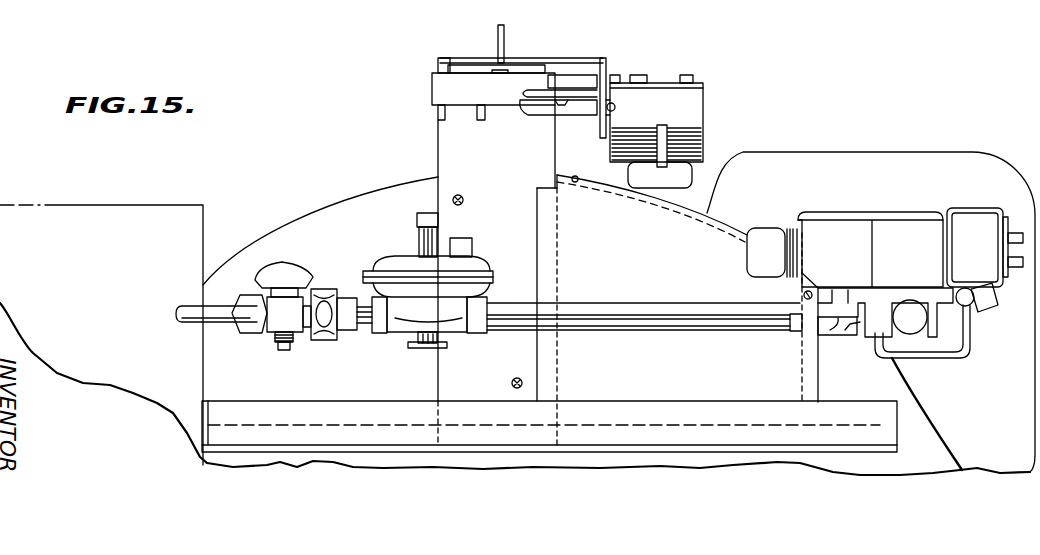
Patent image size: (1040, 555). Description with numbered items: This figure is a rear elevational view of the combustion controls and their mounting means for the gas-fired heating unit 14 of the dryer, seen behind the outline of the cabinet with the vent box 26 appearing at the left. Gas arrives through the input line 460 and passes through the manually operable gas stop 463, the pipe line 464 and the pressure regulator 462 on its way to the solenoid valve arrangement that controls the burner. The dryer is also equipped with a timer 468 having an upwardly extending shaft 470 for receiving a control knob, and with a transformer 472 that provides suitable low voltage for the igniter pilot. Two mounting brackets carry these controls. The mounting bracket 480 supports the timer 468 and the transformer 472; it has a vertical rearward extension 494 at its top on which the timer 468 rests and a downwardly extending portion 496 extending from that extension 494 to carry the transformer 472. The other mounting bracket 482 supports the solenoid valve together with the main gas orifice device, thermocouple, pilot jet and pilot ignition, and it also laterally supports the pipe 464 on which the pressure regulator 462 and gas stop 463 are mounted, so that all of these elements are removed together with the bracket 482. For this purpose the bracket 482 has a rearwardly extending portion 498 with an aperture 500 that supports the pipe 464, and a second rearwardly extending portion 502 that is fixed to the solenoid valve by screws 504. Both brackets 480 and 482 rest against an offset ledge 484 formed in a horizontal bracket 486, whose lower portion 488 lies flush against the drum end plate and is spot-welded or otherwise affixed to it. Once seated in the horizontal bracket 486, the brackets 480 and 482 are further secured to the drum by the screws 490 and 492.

The heating unit 14 is at (908, 152).
The vent box 26 is at (101, 316).
The input line 460 is at (253, 318).
The pressure regulator 462 is at (395, 257).
The manually operable gas stop 463 is at (302, 279).
The pipe line 464 is at (653, 311).
The timer 468 is at (432, 88).
The shaft 470 is at (506, 50).
The transformer 472 is at (705, 103).
The mounting bracket 480 is at (440, 145).
The mounting bracket 482 is at (683, 200).
The offset ledge 484 is at (880, 428).
The horizontal bracket 486 is at (838, 404).
The lower portion 488 is at (897, 445).
The screws 490 is at (463, 202).
The screws 492 is at (584, 165).
The vertical rearward extension 494 is at (449, 60).
The downwardly extending portion 496 is at (614, 50).
The rearwardly extending portion 498 is at (560, 293).
The aperture 500 is at (562, 304).
The bracket hidden edge 502 is at (800, 347).
The screws 504 is at (805, 296).